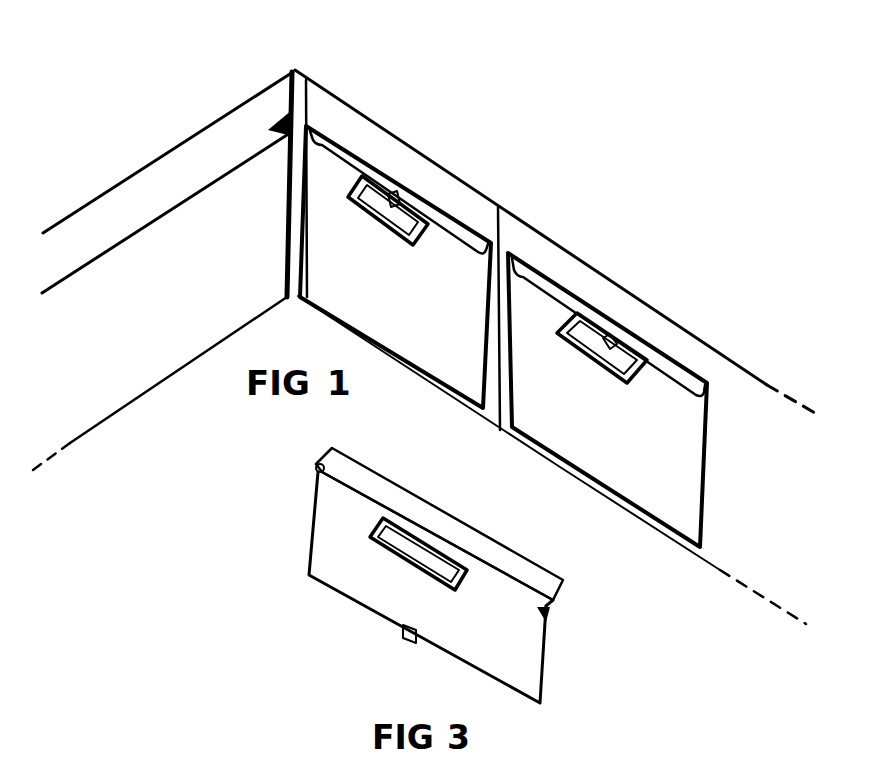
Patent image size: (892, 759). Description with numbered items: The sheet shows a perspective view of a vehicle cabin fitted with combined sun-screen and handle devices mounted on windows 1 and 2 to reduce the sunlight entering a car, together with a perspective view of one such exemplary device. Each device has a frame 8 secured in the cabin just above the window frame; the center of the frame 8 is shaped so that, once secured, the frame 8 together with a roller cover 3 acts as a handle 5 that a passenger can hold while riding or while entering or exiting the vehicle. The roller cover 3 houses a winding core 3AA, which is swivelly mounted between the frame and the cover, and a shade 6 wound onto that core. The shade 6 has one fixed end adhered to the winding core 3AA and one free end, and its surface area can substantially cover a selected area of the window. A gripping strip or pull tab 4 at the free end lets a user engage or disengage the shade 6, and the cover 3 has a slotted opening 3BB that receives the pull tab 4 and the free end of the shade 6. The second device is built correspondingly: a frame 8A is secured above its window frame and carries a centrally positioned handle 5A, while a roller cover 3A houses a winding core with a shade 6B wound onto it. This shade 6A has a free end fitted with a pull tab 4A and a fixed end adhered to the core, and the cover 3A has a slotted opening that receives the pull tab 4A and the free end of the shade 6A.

In FIG. 1, the window 1 is at (402, 233).
In FIG. 1, the window 2 is at (638, 365).
In FIG. 1, the roller cover 3 is at (347, 150).
In FIG. 3, the roller cover 3 is at (352, 492).
In FIG. 1, the roller cover 3A is at (540, 267).
In FIG. 3, the winding core 3AA is at (553, 612).
In FIG. 3, the slotted opening 3BB is at (553, 625).
In FIG. 1, the pull tab 4 is at (398, 207).
In FIG. 3, the pull tab 4 is at (402, 632).
In FIG. 1, the pull tab 4A is at (607, 347).
In FIG. 1, the handle 5 is at (432, 183).
In FIG. 3, the handle 5 is at (390, 548).
In FIG. 1, the handle 5A is at (637, 360).
In FIG. 1, the shade 6 is at (157, 247).
In FIG. 3, the shade 6 is at (494, 645).
In FIG. 1, the shade 6A is at (373, 277).
In FIG. 1, the shade 6B is at (570, 398).
In FIG. 1, the frame 8 is at (332, 112).
In FIG. 3, the frame 8 is at (465, 537).
In FIG. 1, the frame 8A is at (587, 280).